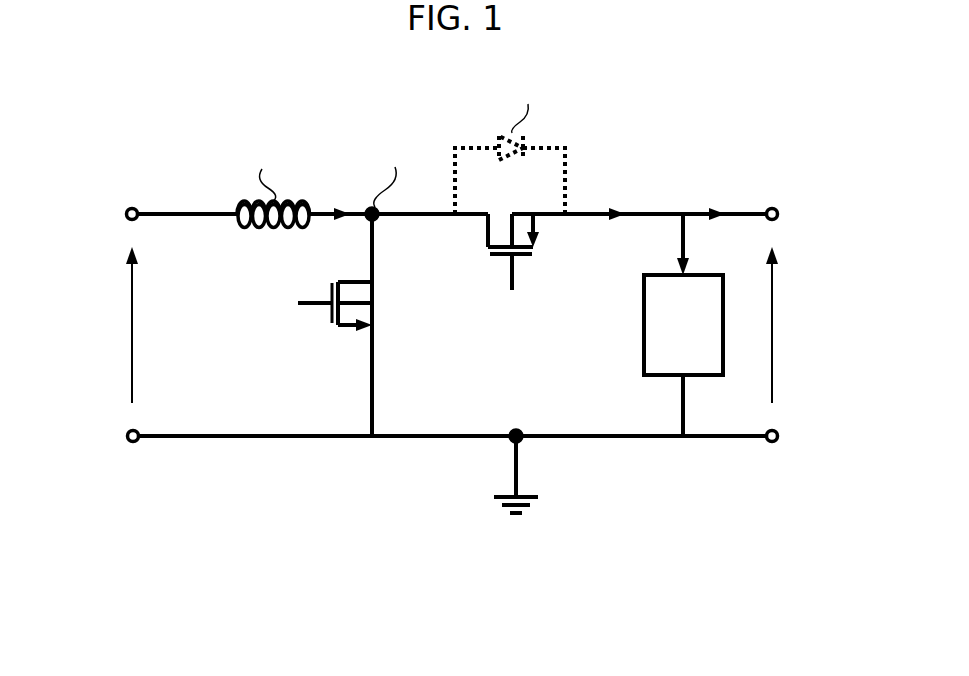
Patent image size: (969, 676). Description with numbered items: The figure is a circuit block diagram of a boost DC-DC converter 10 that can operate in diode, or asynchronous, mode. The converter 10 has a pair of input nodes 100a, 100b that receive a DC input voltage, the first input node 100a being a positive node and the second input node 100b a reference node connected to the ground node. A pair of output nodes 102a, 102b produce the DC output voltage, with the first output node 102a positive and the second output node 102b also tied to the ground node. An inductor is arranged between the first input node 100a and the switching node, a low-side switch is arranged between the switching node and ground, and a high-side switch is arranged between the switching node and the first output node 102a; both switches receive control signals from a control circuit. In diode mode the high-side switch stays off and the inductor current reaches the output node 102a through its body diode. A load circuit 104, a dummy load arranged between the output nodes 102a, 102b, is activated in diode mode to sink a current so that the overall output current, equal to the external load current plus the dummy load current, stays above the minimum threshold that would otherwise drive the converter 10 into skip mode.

The boost DC-DC converter 10 is at (258, 100).
The first input node 100a is at (131, 208).
The second input node 100b is at (131, 442).
The first output node 102a is at (771, 208).
The second output node 102b is at (772, 443).
The load circuit 104 is at (644, 355).